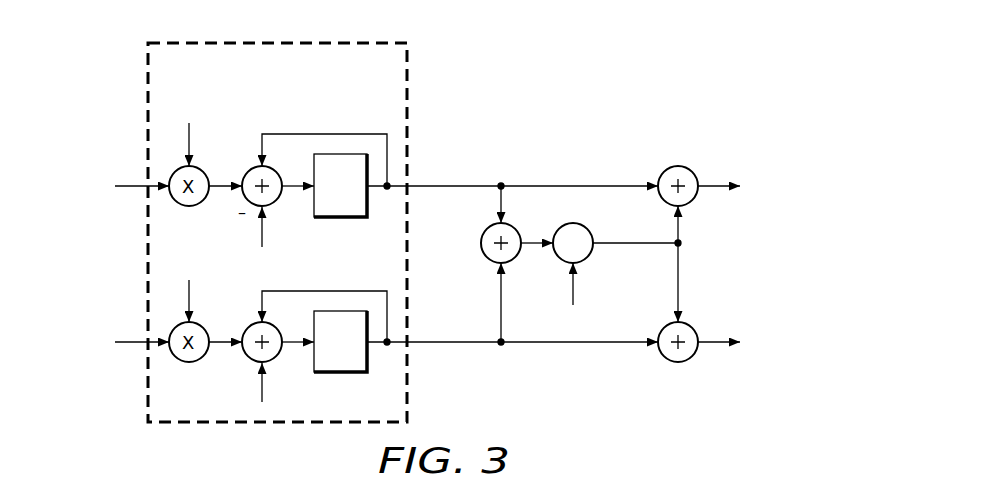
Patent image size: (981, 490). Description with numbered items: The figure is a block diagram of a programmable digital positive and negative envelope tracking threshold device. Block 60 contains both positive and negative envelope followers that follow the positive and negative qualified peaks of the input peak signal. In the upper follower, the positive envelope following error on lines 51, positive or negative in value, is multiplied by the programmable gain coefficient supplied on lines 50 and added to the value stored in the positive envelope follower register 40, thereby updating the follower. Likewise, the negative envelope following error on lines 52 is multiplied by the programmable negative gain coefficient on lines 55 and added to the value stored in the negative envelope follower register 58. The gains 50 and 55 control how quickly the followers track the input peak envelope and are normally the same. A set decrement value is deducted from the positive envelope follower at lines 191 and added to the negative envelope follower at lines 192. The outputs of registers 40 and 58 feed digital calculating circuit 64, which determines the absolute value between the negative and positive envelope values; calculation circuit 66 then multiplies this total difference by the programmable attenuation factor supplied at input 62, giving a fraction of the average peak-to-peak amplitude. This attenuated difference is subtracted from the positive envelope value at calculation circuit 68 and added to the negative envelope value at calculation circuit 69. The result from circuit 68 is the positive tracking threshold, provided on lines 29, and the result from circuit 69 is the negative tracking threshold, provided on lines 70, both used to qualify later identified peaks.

The lines 29 is at (708, 184).
The positive envelope follower register 40 is at (348, 218).
The lines 50 is at (191, 143).
The lines 51 is at (132, 184).
The lines 52 is at (132, 346).
The lines 55 is at (191, 297).
The negative envelope follower register 58 is at (342, 373).
The block 60 is at (148, 262).
The input 62 is at (575, 285).
The digital calculating circuit 64 is at (480, 244).
The calculation circuit 66 is at (589, 229).
The calculation circuit 68 is at (681, 165).
The calculation circuit 69 is at (680, 364).
The lines 70 is at (710, 345).
The lines 191 is at (264, 232).
The lines 192 is at (262, 388).